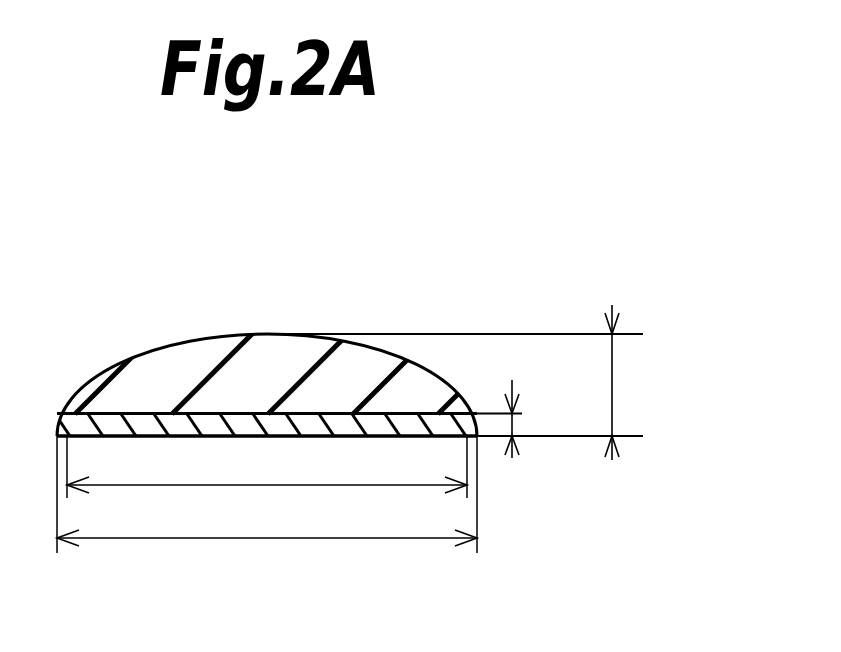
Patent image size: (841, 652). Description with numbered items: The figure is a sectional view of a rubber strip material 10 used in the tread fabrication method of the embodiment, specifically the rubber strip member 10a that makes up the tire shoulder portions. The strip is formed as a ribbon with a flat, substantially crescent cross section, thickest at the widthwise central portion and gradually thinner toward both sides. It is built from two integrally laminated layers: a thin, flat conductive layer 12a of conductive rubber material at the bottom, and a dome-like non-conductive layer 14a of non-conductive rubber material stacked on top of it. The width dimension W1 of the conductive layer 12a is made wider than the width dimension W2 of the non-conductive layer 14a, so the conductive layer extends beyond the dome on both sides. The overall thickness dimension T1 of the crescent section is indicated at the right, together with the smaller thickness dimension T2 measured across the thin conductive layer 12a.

The rubber strip member 10 is at (269, 339).
The rubber strip member 10a is at (281, 318).
The conductive layer 12a is at (183, 427).
The non-conductive layer 14a is at (226, 380).
The thickness dimension T1 is at (612, 388).
The base plate thickness T2 is at (512, 423).
The width dimension W1 is at (267, 559).
The width dimension W2 is at (267, 505).